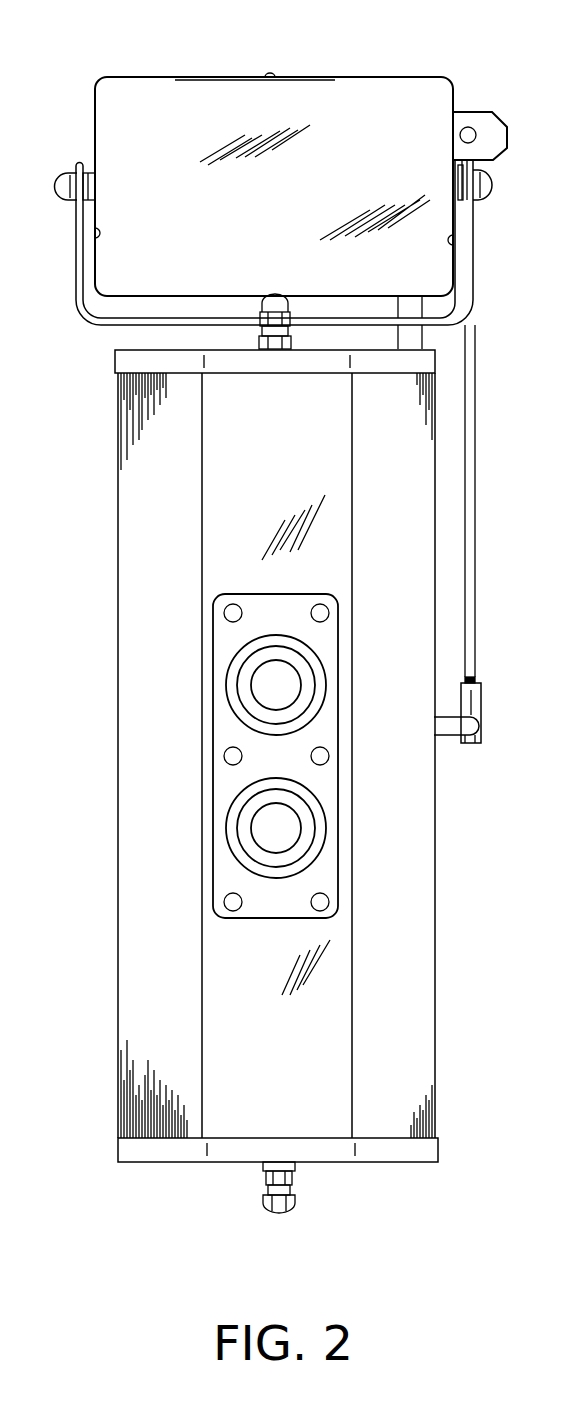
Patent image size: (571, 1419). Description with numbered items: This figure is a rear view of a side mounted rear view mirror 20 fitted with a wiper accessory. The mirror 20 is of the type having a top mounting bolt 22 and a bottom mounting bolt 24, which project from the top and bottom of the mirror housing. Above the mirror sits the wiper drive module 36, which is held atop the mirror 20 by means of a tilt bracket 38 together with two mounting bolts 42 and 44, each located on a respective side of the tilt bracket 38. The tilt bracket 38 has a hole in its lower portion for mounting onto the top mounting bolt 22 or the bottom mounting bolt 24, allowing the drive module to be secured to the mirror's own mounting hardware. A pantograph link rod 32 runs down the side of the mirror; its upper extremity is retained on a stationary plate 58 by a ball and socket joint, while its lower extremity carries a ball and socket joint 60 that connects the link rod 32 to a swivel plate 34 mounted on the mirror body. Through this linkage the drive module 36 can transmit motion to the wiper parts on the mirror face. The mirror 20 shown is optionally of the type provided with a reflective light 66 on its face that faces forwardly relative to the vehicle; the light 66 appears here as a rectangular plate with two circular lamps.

The rear view mirror 20 is at (437, 965).
The top mounting bolt 22 is at (292, 345).
The bottom mounting bolt 24 is at (297, 1178).
The pantograph link rod 32 is at (476, 520).
The swivel plate 34 is at (445, 735).
The wiper drive module 36 is at (379, 77).
The tilt bracket 38 is at (440, 330).
The mounting bolt 42 is at (67, 173).
The mounting bolt 44 is at (487, 195).
The stationary plate 58 is at (483, 123).
The ball and socket joint 60 is at (483, 695).
The reflective light 66 is at (328, 865).